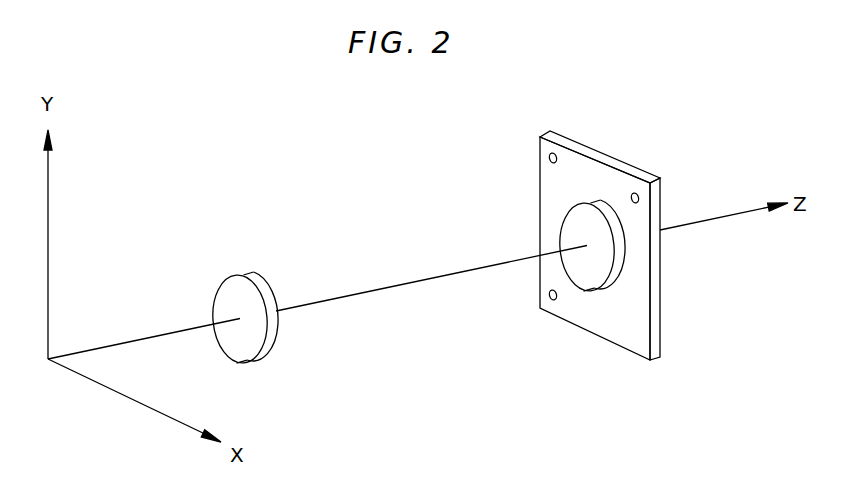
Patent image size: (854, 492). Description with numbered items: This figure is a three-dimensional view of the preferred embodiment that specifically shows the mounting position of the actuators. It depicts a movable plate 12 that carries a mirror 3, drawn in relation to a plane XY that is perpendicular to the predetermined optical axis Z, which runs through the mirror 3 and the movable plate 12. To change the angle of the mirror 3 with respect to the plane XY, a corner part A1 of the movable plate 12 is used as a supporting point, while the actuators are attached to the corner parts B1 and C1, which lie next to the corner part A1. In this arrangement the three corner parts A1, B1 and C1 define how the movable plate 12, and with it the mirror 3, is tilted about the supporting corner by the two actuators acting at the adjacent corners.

The mirror 3 is at (248, 276).
The movable plate 12 is at (596, 157).
The corner part A1 is at (548, 158).
The corner part B1 is at (638, 193).
The corner part C1 is at (553, 300).